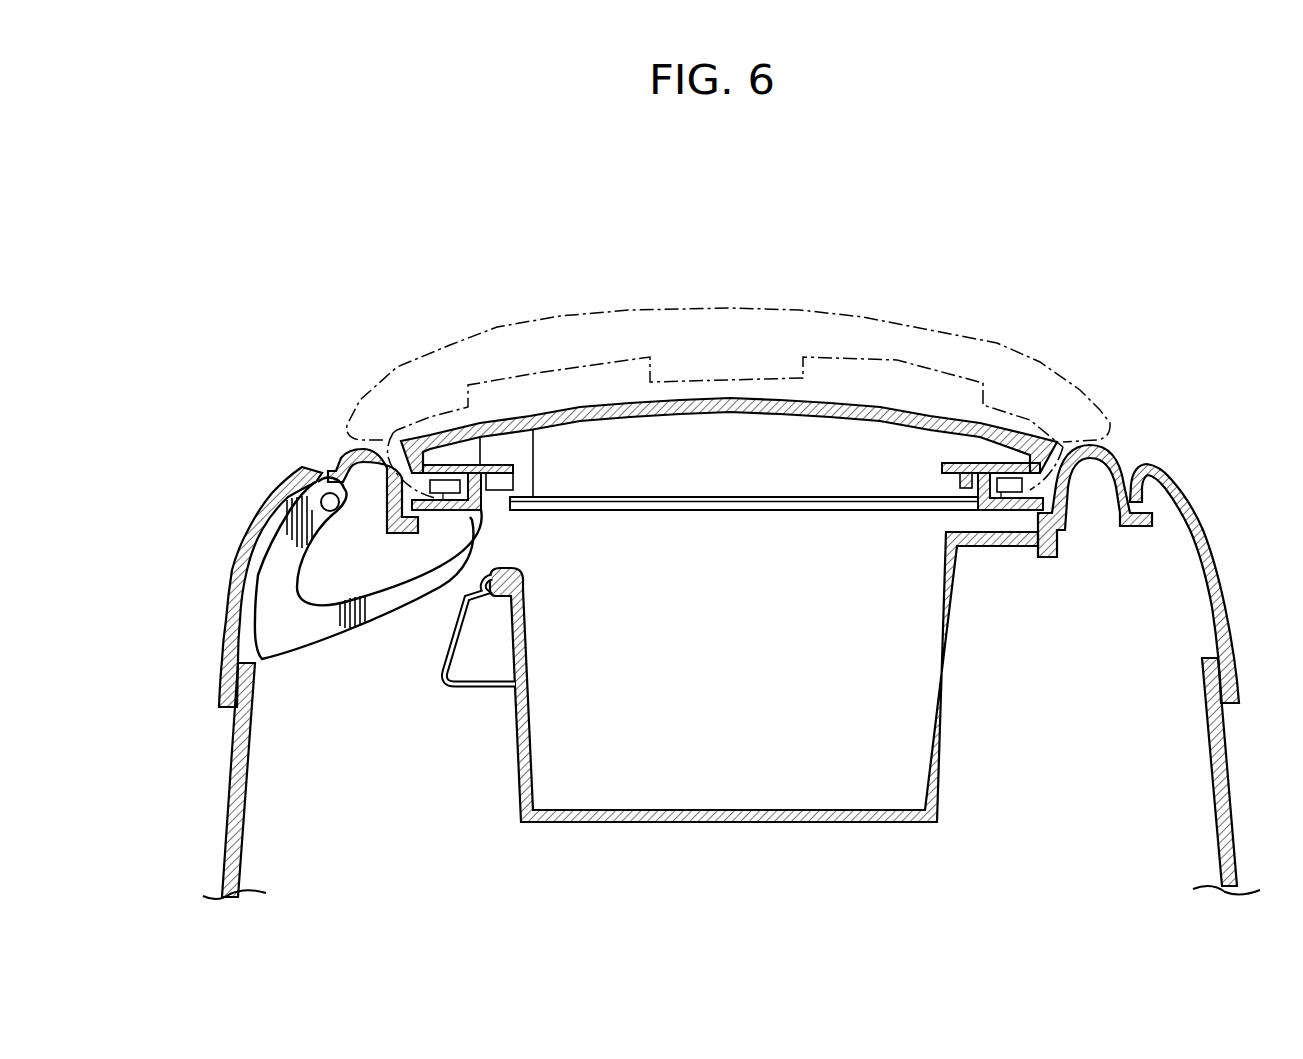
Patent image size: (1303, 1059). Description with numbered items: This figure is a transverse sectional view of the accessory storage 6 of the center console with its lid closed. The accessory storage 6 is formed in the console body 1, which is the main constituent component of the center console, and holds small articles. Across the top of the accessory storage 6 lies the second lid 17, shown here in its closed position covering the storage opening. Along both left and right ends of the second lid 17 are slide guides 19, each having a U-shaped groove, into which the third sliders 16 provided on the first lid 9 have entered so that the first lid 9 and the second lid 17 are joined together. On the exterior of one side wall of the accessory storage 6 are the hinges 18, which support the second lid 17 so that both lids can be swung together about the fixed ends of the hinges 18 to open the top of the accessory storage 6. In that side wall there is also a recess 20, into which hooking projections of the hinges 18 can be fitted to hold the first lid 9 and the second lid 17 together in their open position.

The console body 1 is at (1205, 492).
The accessory storage 6 is at (734, 802).
The first lid 9 is at (733, 305).
The third sliders 16 is at (480, 519).
The second lid 17 is at (888, 398).
The hinges 18 is at (282, 638).
The slide guides 19 is at (481, 463).
The recess 20 is at (443, 607).